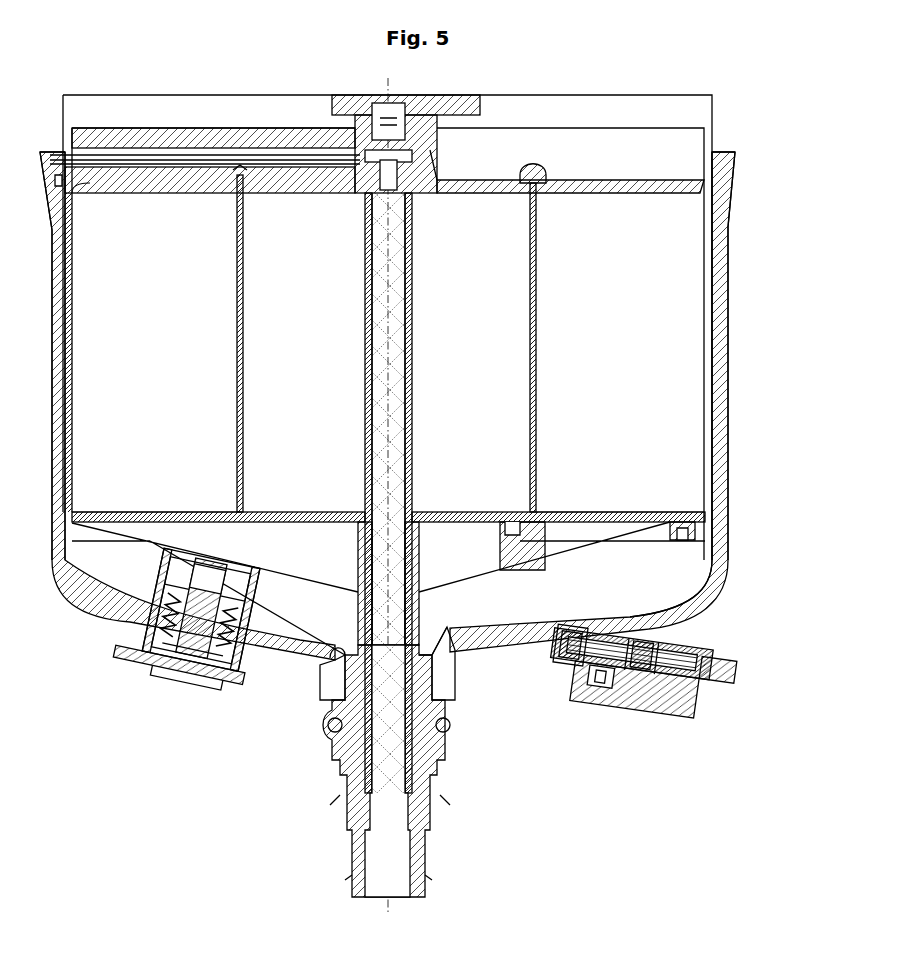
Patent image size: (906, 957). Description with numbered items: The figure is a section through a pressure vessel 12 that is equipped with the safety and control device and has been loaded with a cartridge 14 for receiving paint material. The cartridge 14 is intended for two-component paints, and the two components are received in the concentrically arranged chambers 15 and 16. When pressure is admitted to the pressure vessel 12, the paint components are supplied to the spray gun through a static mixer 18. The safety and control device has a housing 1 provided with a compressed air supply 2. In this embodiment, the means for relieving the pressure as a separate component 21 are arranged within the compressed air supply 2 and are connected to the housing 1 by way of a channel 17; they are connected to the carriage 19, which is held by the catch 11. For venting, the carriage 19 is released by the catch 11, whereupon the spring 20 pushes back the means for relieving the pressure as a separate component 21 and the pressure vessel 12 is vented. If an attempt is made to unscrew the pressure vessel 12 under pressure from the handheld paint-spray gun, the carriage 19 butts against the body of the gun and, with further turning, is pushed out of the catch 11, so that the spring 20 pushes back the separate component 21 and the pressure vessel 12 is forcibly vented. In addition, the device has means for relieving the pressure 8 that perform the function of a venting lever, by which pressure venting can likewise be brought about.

The housing 1 is at (135, 690).
The compressed air supply 2 is at (720, 690).
The means for relieving the pressure 8 is at (200, 695).
The catch 11 is at (612, 705).
The pressure vessel 12 is at (712, 612).
The cartridge 14 is at (72, 428).
The chamber 15 is at (337, 352).
The chamber 16 is at (190, 352).
The channel 17 is at (440, 685).
The static mixer 18 is at (345, 795).
The carriage 19 is at (690, 705).
The spring 20 is at (563, 700).
The means for relieving the pressure as a separate component 21 is at (737, 700).